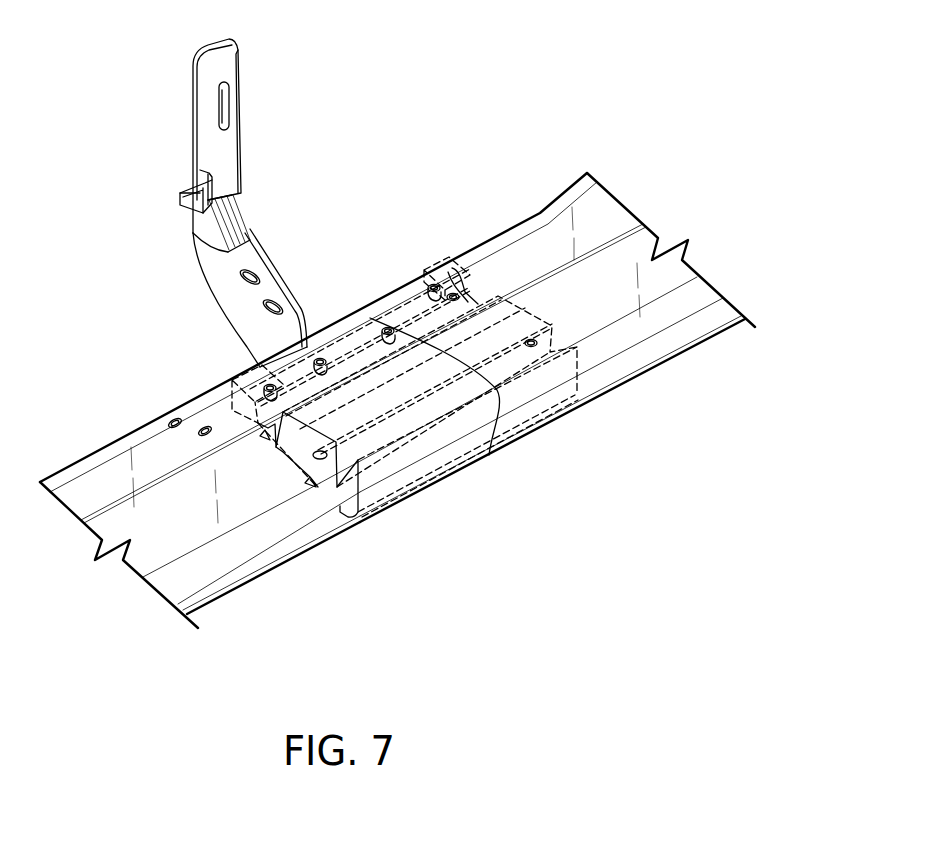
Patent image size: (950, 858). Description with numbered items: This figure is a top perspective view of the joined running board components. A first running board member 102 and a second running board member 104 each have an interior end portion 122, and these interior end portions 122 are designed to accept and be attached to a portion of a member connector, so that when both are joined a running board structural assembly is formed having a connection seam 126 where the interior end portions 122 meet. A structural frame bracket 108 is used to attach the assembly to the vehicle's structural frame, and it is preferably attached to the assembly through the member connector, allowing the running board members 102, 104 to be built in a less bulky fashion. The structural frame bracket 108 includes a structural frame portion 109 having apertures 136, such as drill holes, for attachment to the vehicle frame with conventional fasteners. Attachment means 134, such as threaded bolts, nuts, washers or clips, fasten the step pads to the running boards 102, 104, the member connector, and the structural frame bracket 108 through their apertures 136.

The first running board member 102 is at (586, 222).
The second running board member 104 is at (103, 488).
The structural frame bracket 108 is at (198, 182).
The structural frame portion 109 is at (230, 52).
The interior end portion 122 is at (322, 258).
The connection seam 126 is at (382, 379).
The attachment means 134 is at (248, 372).
The apertures 136 is at (226, 97).